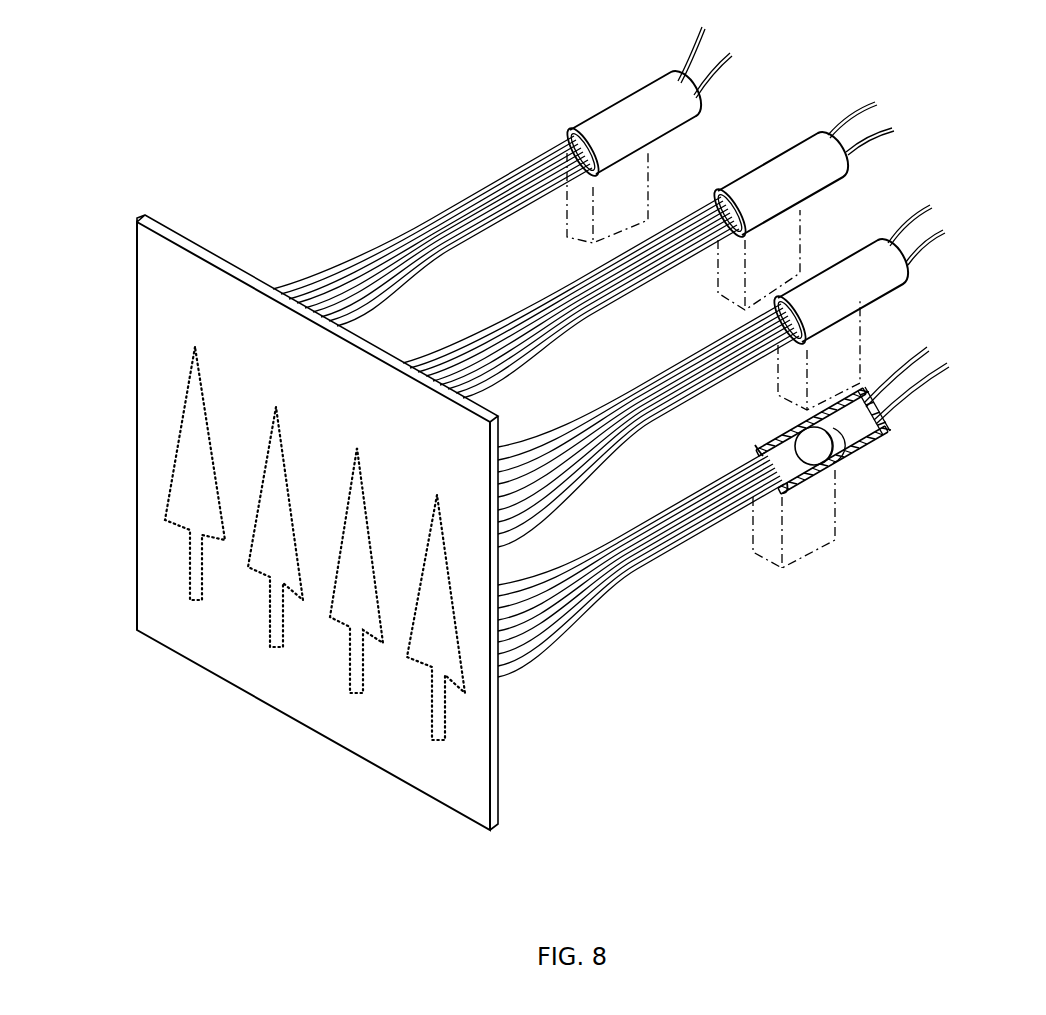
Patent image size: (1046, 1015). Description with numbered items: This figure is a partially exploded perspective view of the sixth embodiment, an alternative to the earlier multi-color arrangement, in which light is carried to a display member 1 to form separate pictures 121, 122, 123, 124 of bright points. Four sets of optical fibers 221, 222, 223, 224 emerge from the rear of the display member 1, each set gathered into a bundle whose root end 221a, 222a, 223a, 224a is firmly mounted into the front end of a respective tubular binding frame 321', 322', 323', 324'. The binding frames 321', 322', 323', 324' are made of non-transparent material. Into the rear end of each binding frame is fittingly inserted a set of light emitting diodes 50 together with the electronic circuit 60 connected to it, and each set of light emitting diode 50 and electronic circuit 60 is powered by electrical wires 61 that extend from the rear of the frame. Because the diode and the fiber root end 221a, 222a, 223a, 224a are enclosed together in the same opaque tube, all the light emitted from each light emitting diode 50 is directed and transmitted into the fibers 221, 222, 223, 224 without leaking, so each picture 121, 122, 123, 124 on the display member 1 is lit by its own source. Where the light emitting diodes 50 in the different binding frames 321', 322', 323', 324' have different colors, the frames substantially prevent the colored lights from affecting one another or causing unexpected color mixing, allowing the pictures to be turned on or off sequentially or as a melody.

The display member 1 is at (477, 748).
The picture 121 is at (187, 473).
The picture 122 is at (263, 585).
The picture 123 is at (352, 635).
The picture 124 is at (427, 712).
The optical fibers 221 is at (417, 250).
The optical fibers 222 is at (513, 320).
The optical fibers 223 is at (617, 420).
The optical fibers 224 is at (633, 547).
The root end 221a is at (578, 128).
The root end 222a is at (728, 187).
The root end 223a is at (782, 320).
The root end 224a is at (787, 497).
The tubular binding frame 321' is at (634, 130).
The tubular binding frame 322' is at (783, 196).
The tubular binding frame 323' is at (843, 297).
The tubular binding frame 324' is at (852, 498).
The light emitting diode 50 is at (814, 447).
The electronic circuit 60 is at (873, 443).
The electrical wires 61 is at (730, 58).